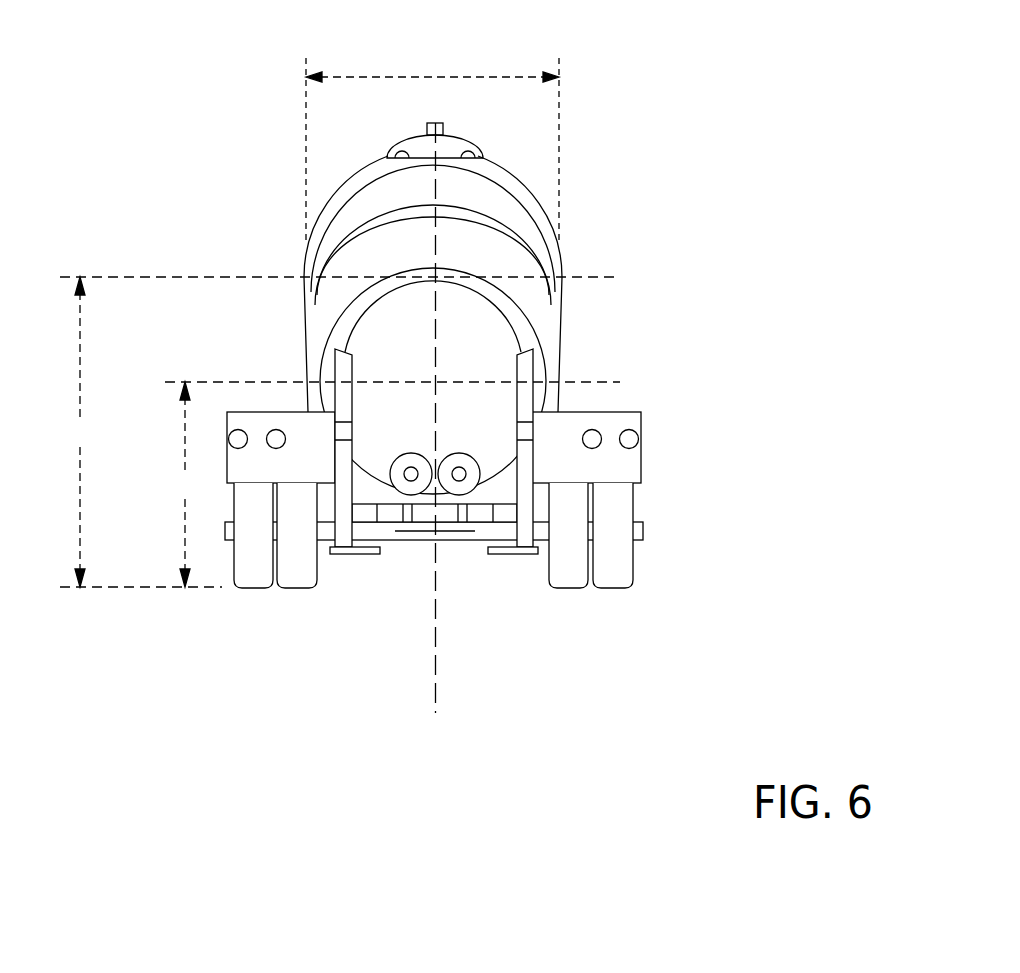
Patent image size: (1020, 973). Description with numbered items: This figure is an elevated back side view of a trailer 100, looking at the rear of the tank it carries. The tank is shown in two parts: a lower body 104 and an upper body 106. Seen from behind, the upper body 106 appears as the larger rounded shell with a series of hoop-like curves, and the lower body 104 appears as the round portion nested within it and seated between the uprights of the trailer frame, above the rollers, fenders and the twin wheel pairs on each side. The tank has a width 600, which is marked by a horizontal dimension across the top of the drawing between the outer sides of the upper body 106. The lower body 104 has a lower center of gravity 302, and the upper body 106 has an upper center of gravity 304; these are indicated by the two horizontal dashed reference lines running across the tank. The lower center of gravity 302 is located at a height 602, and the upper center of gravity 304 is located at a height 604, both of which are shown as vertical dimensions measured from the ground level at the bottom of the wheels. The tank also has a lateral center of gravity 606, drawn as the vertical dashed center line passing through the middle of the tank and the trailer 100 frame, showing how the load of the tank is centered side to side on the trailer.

The trailer 100 is at (522, 298).
The upper body 106 is at (498, 194).
The lower body 104 is at (500, 336).
The upper center of gravity 304 is at (601, 277).
The lower center of gravity 302 is at (601, 382).
The width 600 is at (432, 147).
The height 602 is at (171, 484).
The height 604 is at (134, 432).
The lateral center of gravity 606 is at (436, 625).